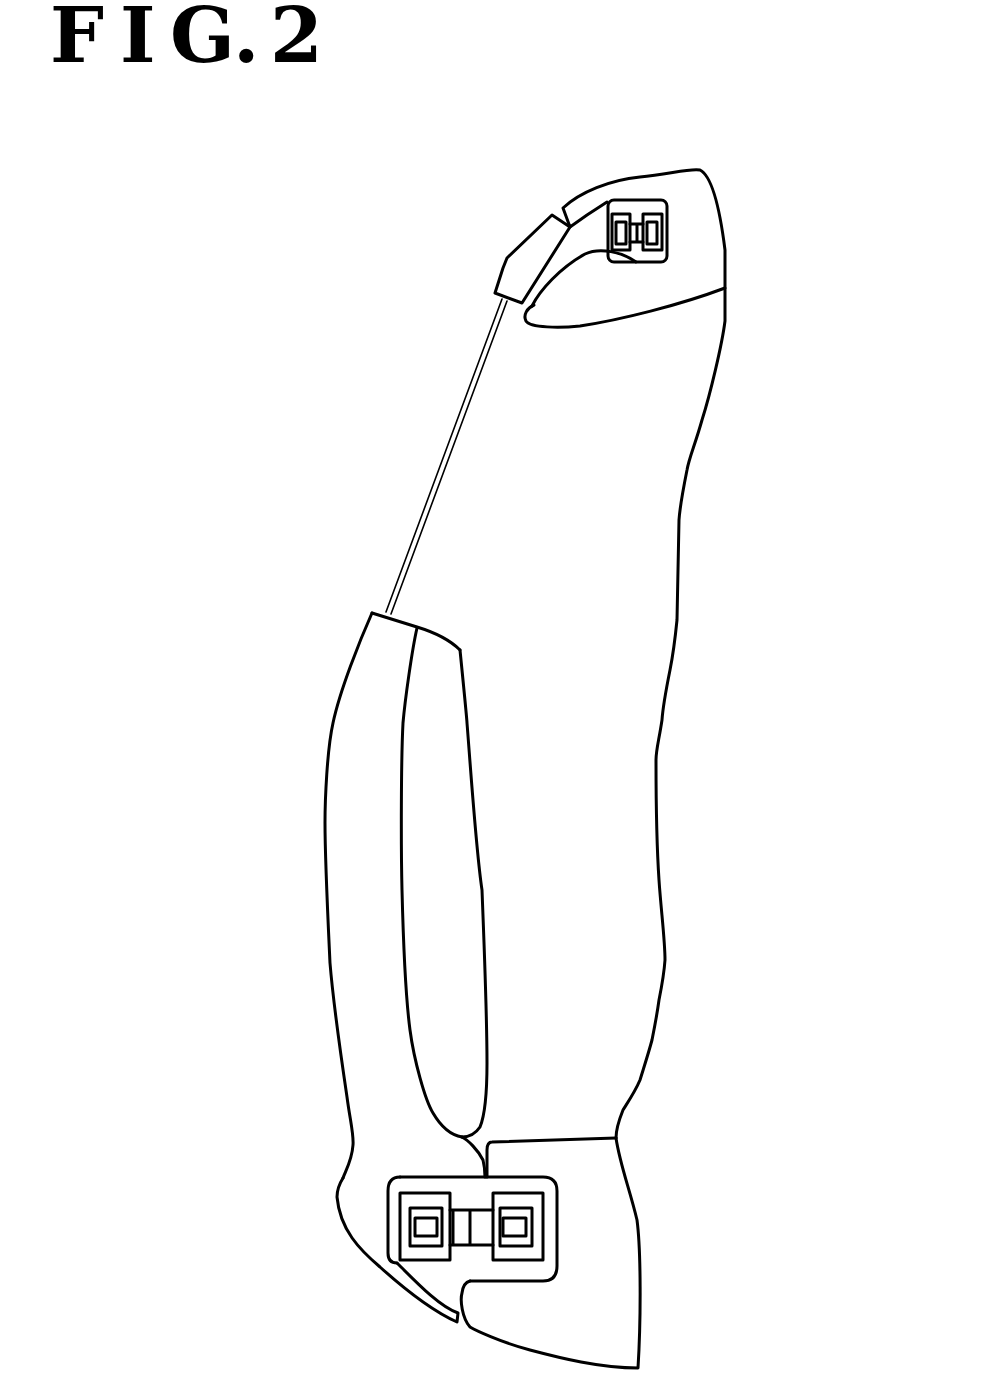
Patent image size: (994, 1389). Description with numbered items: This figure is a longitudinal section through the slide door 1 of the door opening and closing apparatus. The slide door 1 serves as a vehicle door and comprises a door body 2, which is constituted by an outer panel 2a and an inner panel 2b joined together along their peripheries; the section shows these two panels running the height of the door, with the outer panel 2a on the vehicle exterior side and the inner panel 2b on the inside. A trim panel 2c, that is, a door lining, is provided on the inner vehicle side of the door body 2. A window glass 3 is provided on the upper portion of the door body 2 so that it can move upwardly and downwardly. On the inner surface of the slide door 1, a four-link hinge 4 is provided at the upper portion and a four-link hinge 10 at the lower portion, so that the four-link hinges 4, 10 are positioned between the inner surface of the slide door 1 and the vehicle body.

The slide door 1 is at (248, 337).
The door body 2 is at (382, 895).
The outer panel 2a is at (323, 833).
The inner panel 2b is at (398, 905).
The trim panel 2c is at (480, 810).
The window glass 3 is at (443, 452).
The four-link hinge 4 is at (678, 222).
The four-link hinge 10 is at (567, 1212).